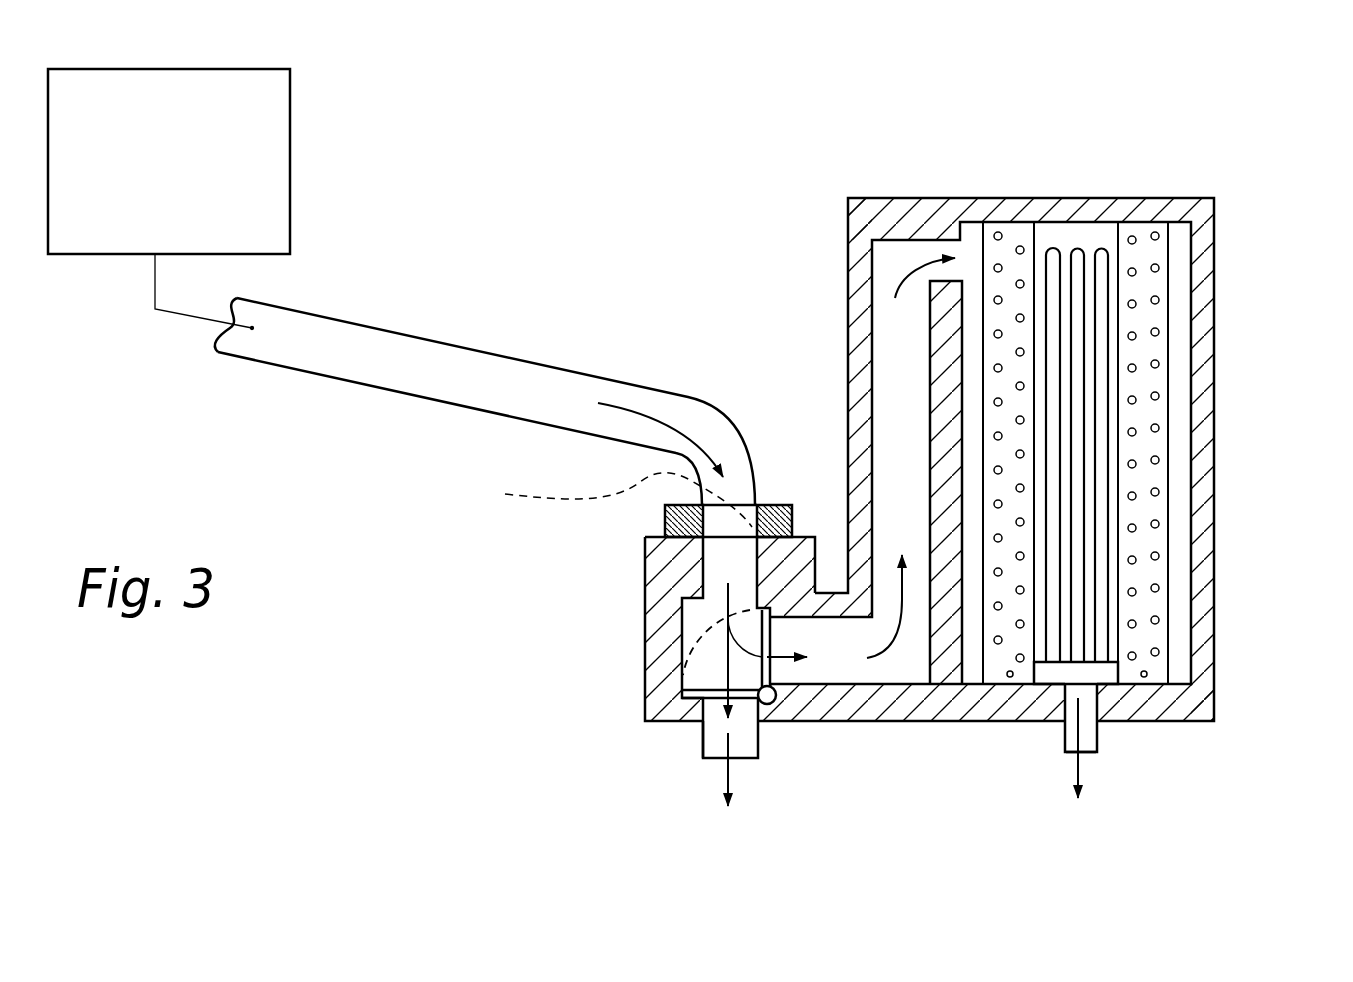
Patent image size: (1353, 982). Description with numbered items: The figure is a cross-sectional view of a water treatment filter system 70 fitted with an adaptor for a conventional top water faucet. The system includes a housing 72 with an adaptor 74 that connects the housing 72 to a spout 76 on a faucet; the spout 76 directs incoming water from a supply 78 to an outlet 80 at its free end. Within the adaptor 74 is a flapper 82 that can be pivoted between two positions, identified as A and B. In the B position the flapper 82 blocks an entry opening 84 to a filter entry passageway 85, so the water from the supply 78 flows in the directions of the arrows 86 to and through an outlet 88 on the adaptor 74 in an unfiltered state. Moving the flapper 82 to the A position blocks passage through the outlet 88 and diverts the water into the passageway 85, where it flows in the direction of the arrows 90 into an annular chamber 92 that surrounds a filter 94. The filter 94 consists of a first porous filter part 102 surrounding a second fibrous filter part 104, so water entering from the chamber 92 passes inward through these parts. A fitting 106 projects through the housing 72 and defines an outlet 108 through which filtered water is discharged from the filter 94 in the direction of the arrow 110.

The water treatment filter system 70 is at (1001, 468).
The housing 72 is at (1157, 225).
The adaptor 74 is at (689, 570).
The spout 76 is at (430, 345).
The supply 78 is at (160, 212).
The outlet 80 is at (611, 574).
The flapper 82 is at (768, 672).
The entry opening 84 is at (750, 623).
The filter entry passageway 85 is at (843, 667).
The arrows 86 is at (645, 412).
The outlet 88 is at (758, 755).
The arrows 90 is at (912, 268).
The annular chamber 92 is at (1178, 525).
The filter 94 is at (1066, 237).
The first porous filter part 102 is at (1150, 293).
The second fibrous filter part 104 is at (1040, 232).
The fitting 106 is at (1097, 740).
The outlet 108 is at (1090, 755).
The arrow 110 is at (1072, 768).